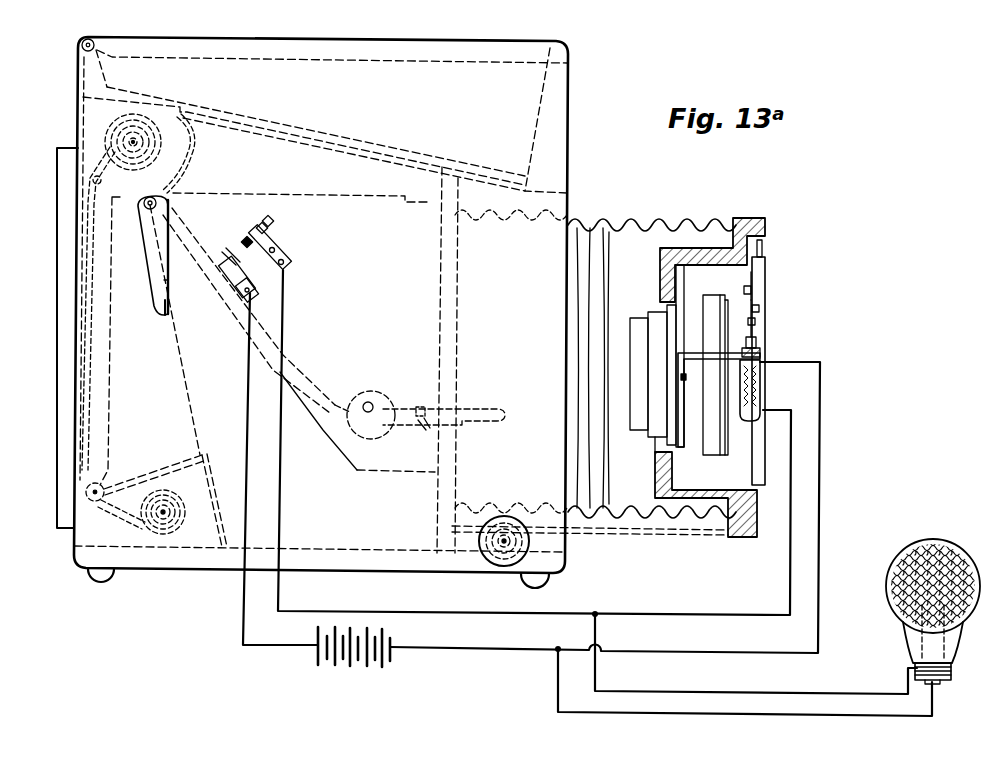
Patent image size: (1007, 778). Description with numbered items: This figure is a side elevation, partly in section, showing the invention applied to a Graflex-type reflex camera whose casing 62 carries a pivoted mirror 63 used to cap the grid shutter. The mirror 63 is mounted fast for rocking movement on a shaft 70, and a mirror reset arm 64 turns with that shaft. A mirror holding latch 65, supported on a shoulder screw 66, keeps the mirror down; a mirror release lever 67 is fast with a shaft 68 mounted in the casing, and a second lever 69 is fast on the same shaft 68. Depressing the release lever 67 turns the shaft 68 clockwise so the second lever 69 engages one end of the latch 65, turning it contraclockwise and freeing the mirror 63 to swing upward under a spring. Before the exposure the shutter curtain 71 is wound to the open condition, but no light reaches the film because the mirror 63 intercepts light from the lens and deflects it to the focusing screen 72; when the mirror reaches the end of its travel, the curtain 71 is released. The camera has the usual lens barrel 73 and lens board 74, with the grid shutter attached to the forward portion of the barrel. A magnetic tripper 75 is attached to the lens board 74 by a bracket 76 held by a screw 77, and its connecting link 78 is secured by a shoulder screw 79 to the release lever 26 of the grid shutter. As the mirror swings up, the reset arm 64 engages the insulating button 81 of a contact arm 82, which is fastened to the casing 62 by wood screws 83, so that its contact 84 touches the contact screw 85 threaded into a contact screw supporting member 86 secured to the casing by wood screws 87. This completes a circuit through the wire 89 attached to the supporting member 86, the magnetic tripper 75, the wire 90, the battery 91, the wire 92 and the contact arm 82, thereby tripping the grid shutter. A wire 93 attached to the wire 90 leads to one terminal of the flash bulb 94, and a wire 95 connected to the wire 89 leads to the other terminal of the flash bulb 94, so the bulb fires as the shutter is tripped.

The release lever 26 is at (756, 288).
The camera casing 62 is at (530, 92).
The pivoted mirror 63 is at (330, 400).
The mirror reset arm 64 is at (155, 282).
The mirror holding latch 65 is at (352, 408).
The shoulder screw 66 is at (366, 402).
The mirror release lever 67 is at (487, 422).
The shaft 68 is at (420, 430).
The second lever 69 is at (420, 408).
The shaft 70 is at (160, 198).
The shutter curtain 71 is at (113, 146).
The focusing screen 72 is at (347, 141).
The lens barrel 73 is at (693, 442).
The lens board 74 is at (668, 280).
The magnetic tripper 75 is at (762, 390).
The bracket 76 is at (706, 375).
The screw 77 is at (719, 400).
The connecting link 78 is at (760, 310).
The shoulder screw 79 is at (748, 290).
The insulating button 81 is at (224, 256).
The contact arm 82 is at (222, 280).
The wood screws 83 is at (238, 294).
The contact 84 is at (240, 244).
The contact screw 85 is at (264, 223).
The contact screw supporting member 86 is at (284, 252).
The wood screws 87 is at (275, 250).
The wire 89 is at (283, 497).
The wire 90 is at (822, 505).
The battery 91 is at (359, 664).
The wire 92 is at (247, 535).
The wire 93 is at (733, 714).
The flash bulb 94 is at (929, 548).
The wire 95 is at (733, 691).